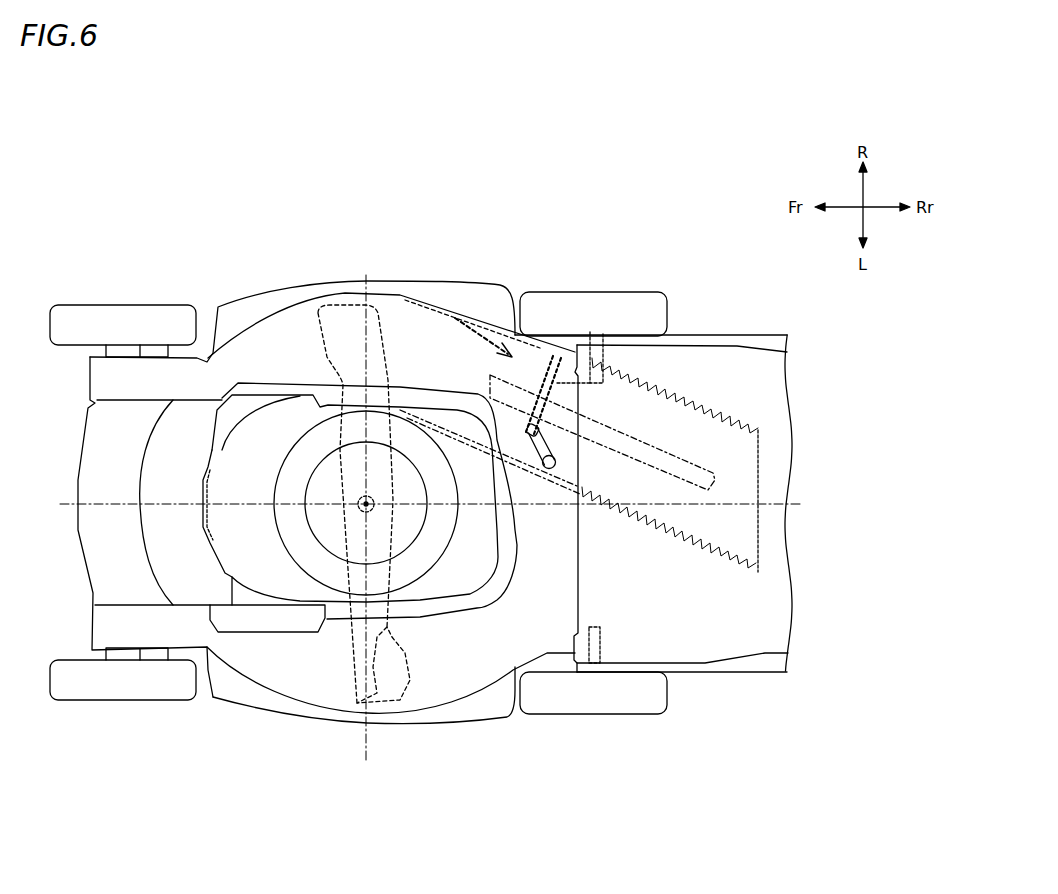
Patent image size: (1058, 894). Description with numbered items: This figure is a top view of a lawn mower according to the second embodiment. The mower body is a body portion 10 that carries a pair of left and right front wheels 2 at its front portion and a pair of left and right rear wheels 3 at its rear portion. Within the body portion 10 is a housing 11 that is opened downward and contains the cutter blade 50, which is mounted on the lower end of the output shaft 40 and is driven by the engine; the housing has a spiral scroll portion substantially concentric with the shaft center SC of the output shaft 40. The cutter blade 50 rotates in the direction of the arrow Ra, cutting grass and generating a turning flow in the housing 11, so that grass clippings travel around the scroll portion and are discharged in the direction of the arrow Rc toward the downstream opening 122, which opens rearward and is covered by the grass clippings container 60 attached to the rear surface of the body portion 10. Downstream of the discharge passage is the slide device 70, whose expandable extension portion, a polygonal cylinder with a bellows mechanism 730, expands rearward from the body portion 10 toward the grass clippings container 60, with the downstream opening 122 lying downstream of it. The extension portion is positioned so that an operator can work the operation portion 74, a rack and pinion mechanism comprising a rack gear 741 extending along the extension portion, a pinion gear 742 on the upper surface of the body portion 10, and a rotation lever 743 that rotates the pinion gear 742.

The front wheels 2 is at (121, 318).
The rear wheels 3 is at (647, 305).
The body portion 10 is at (72, 286).
The housing 11 is at (295, 343).
The output shaft 40 is at (365, 504).
The cutter blade 50 is at (388, 642).
The grass clippings container 60 is at (756, 353).
The slide device 70 is at (729, 399).
The operation portion 74 is at (543, 420).
The downstream opening 122 is at (791, 447).
The bellows mechanism 730 is at (667, 385).
The rack gear 741 is at (713, 480).
The pinion gear 742 is at (514, 450).
The rotation lever 743 is at (549, 470).
The shaft center SC is at (360, 510).
The arrow Ra is at (353, 678).
The arrow Rc is at (565, 384).